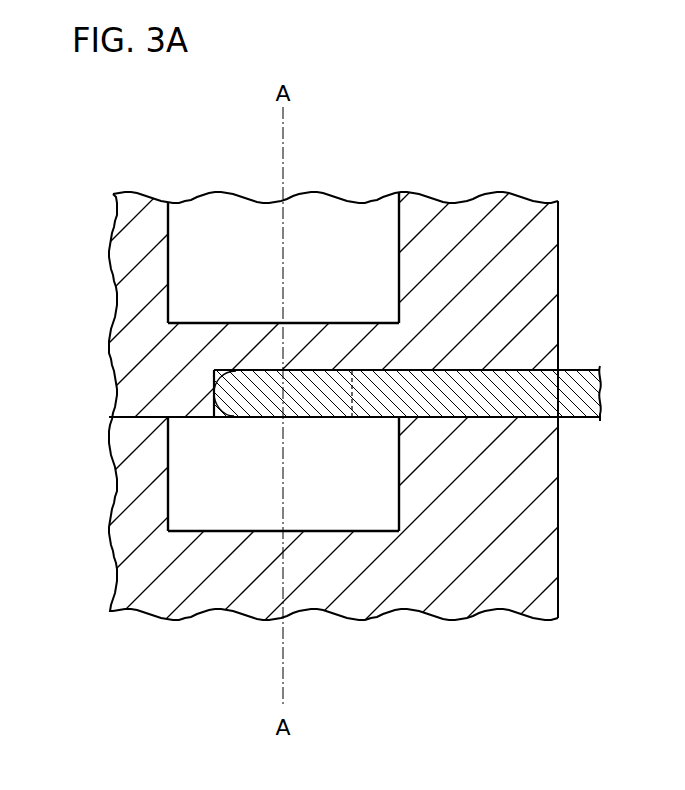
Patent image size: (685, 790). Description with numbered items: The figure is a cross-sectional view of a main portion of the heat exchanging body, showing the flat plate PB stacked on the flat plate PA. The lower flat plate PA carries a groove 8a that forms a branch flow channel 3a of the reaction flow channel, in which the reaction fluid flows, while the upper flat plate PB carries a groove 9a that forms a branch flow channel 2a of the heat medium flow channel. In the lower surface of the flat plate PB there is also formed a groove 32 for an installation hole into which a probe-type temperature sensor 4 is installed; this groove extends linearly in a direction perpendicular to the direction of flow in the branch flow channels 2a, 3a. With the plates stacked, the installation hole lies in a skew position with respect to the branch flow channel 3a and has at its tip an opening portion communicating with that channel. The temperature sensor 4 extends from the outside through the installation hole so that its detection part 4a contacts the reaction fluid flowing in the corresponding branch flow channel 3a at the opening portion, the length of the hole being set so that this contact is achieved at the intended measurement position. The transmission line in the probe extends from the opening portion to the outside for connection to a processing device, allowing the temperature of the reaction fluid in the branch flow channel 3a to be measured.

The branch flow channel 2a is at (363, 232).
The branch flow channel 3a is at (353, 478).
The temperature sensor 4 is at (330, 372).
The detection part 4a is at (525, 386).
The groove 9a is at (347, 322).
The groove 8a is at (355, 530).
The groove 32 is at (487, 416).
The flat plate PB is at (127, 385).
The flat plate PA is at (362, 587).